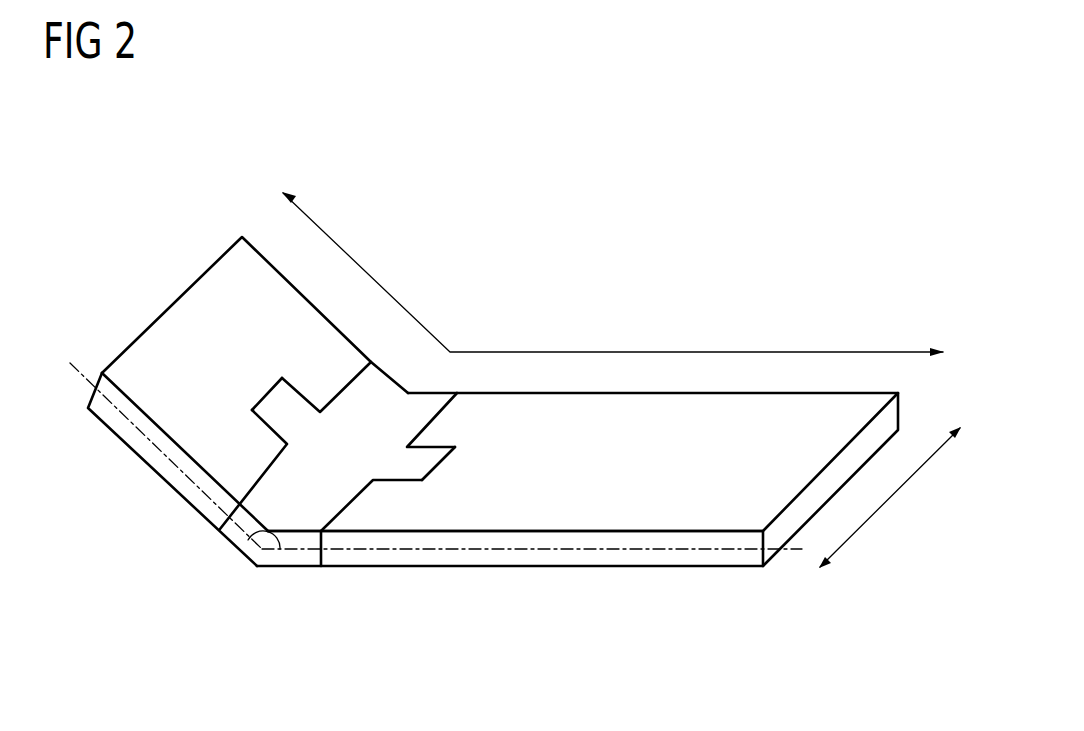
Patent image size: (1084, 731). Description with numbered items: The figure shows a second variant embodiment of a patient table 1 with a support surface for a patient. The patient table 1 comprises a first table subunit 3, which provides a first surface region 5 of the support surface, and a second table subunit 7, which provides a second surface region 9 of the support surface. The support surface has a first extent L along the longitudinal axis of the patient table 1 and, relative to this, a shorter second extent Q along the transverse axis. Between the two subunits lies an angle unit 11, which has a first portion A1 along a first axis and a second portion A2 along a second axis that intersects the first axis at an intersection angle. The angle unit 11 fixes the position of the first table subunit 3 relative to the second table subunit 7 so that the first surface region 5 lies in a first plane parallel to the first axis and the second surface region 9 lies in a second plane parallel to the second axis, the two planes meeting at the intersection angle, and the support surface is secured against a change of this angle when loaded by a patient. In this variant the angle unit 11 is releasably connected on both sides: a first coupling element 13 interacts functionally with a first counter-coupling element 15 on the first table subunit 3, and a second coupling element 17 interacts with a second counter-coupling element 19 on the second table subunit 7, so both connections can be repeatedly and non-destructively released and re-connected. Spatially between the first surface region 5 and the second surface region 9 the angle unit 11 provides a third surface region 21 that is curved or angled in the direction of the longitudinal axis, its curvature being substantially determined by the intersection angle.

The patient table 1 is at (515, 407).
The first table subunit 3 is at (577, 518).
The first surface region 5 is at (615, 510).
The second table subunit 7 is at (188, 287).
The second surface region 9 is at (248, 388).
The angle unit 11 is at (257, 567).
The first coupling element 13 is at (425, 455).
The first counter-coupling element 15 is at (398, 482).
The second coupling element 17 is at (280, 407).
The second counter-coupling element 19 is at (253, 420).
The third surface region 21 is at (378, 422).
The first portion A1 is at (290, 570).
The second portion A2 is at (230, 548).
The first extent L is at (594, 352).
The second extent Q is at (892, 493).